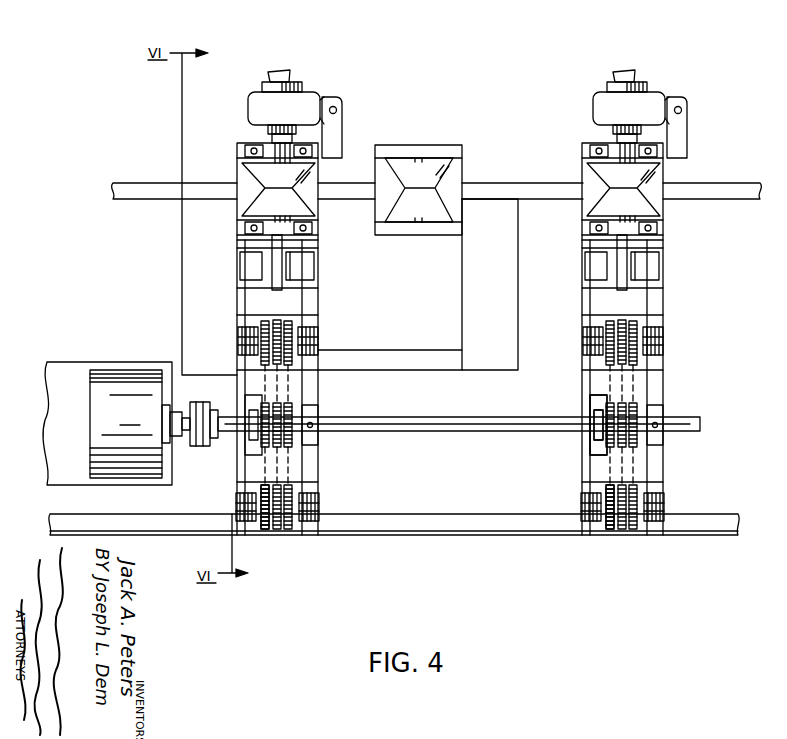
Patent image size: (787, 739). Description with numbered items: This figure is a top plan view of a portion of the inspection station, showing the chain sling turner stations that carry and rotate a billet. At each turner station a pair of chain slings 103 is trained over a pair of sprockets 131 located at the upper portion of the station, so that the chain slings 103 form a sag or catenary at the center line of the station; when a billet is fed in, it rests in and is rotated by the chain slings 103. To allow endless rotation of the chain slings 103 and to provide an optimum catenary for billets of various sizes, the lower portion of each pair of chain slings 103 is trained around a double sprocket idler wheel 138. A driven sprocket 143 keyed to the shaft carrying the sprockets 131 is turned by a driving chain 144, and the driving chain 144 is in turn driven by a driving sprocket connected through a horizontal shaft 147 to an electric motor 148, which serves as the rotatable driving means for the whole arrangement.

The chain slings 103 is at (285, 375).
The sprockets 131 is at (290, 322).
The double sprocket idler wheel 138 is at (283, 455).
The driven sprocket 143 is at (270, 535).
The driving chain 144 is at (592, 460).
The horizontal shaft 147 is at (470, 432).
The electric motor 148 is at (122, 388).